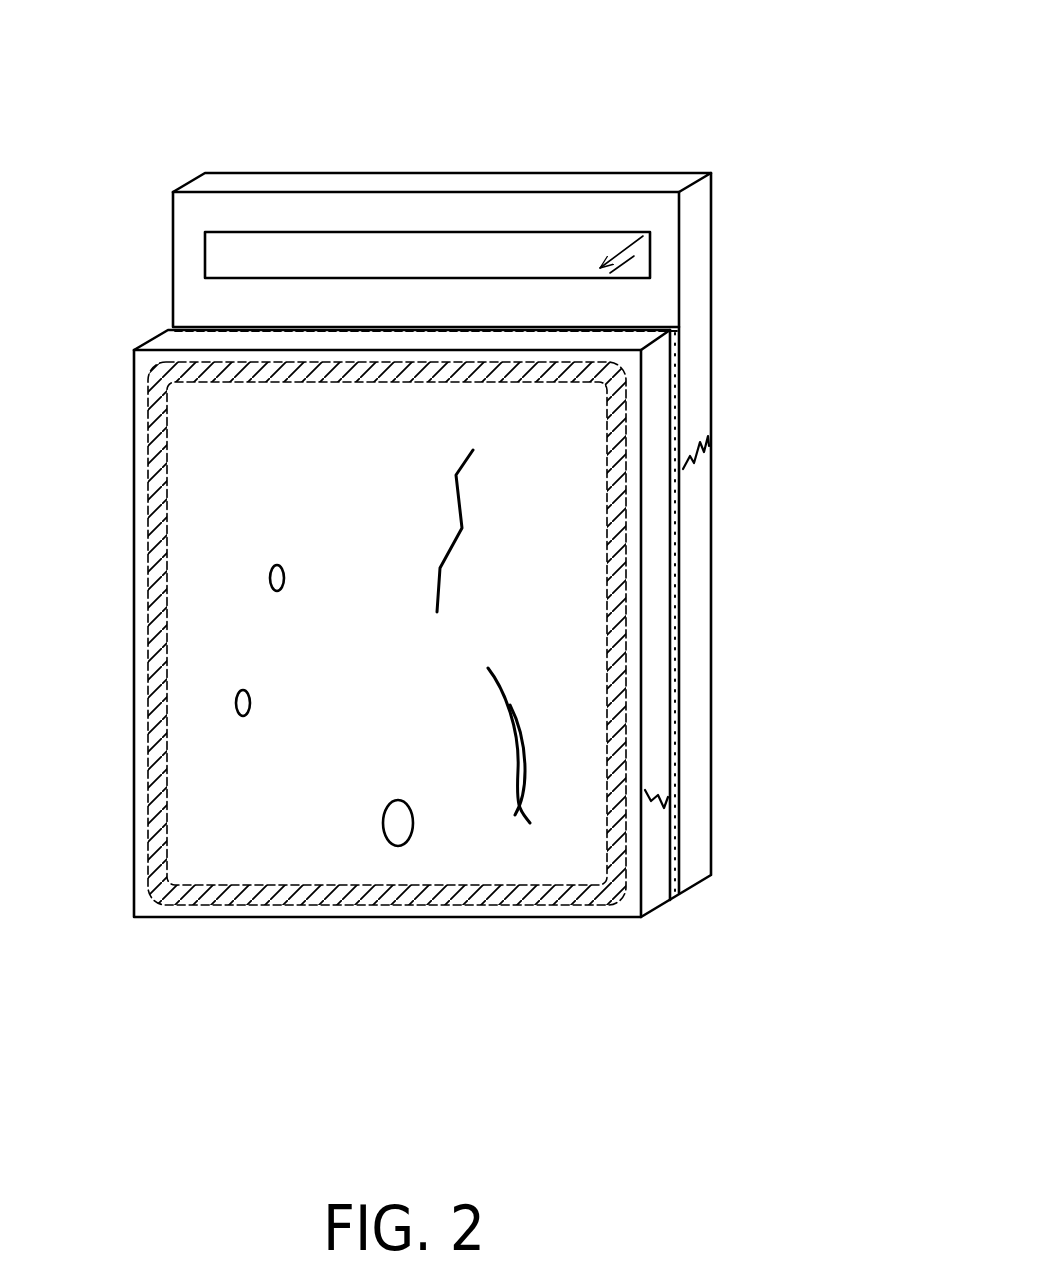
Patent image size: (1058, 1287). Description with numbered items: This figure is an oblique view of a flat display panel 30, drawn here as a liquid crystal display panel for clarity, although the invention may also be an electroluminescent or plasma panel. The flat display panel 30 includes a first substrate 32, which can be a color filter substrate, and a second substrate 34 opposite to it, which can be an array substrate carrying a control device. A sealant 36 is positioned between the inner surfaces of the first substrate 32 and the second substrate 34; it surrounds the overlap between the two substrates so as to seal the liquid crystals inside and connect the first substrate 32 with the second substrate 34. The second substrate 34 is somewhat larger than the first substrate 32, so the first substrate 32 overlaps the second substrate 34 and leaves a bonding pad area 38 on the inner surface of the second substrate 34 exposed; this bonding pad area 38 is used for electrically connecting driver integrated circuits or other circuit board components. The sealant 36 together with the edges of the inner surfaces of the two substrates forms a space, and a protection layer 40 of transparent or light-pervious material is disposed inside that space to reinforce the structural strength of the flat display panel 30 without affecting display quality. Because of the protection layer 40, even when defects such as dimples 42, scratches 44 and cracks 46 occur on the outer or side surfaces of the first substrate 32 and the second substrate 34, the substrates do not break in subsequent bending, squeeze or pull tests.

The flat display panel 30 is at (733, 64).
The first substrate 32 is at (165, 345).
The second substrate 34 is at (205, 182).
The sealant 36 is at (460, 893).
The bonding pad area 38 is at (648, 234).
The protection layer 40 is at (681, 378).
The dimples 42 is at (270, 578).
The scratches 44 is at (462, 528).
The cracks 46 is at (702, 464).